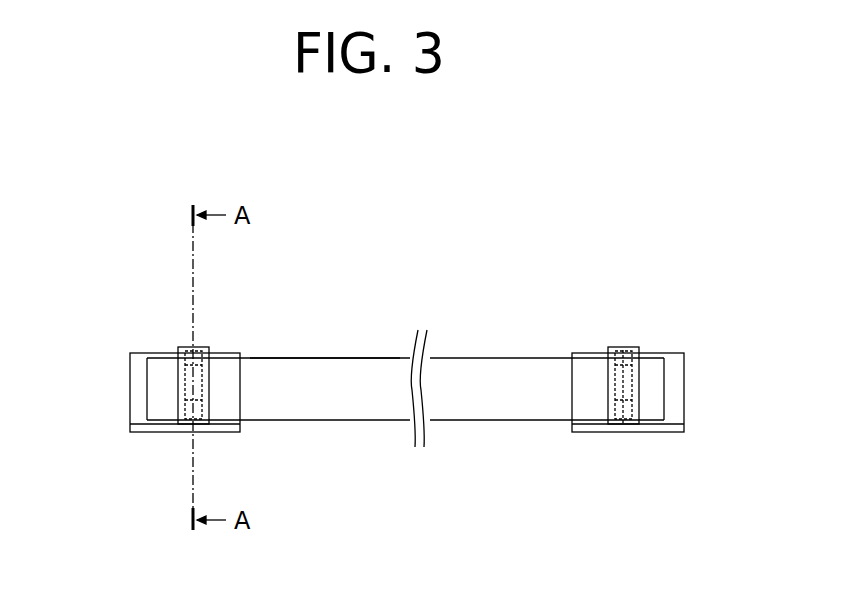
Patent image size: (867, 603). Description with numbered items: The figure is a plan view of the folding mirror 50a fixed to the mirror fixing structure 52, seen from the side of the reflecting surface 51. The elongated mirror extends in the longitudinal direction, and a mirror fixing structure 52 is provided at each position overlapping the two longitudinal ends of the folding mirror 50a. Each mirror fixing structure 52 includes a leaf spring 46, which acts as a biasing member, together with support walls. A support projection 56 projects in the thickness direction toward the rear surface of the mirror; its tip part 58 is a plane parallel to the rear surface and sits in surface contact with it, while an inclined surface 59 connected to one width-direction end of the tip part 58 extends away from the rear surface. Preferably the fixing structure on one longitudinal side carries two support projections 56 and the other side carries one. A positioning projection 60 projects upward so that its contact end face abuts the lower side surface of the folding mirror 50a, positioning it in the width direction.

The leaf spring 46 is at (178, 347).
The folding mirror 50a is at (325, 358).
The reflecting surface 51 is at (354, 383).
The mirror fixing structure 52 is at (140, 354).
The support projection 56 is at (285, 283).
The tip part 58 is at (214, 351).
The inclined surface 59 is at (207, 347).
The positioning projection 60 is at (622, 432).